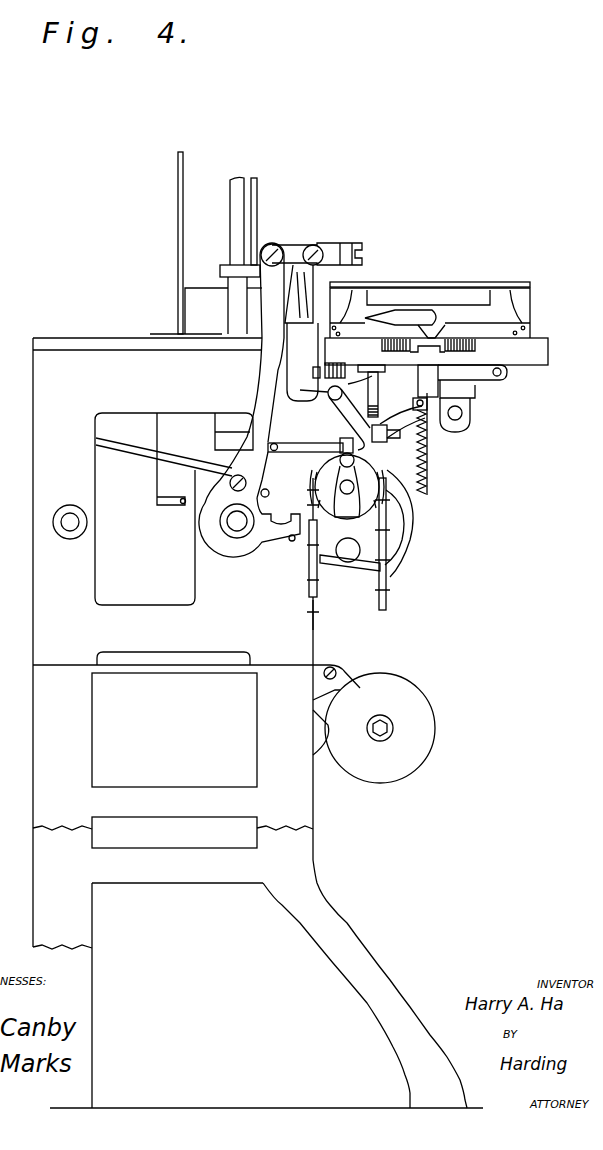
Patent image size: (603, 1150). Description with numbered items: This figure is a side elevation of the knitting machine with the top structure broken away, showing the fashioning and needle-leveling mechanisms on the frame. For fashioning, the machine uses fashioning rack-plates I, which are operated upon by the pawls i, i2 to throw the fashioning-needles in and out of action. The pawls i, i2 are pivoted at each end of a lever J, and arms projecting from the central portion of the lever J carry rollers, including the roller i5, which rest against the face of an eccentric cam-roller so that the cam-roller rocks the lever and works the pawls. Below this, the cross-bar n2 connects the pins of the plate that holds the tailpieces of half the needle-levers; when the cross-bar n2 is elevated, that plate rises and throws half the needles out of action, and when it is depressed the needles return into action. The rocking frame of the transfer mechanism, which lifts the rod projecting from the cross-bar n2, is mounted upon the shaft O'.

The fashioning rack-plate I is at (385, 348).
The pawl i is at (410, 347).
The pawl i2 is at (442, 348).
The roller i5 is at (340, 366).
The lever J is at (472, 381).
The cross-bar n2 is at (390, 440).
The shaft O' is at (348, 571).